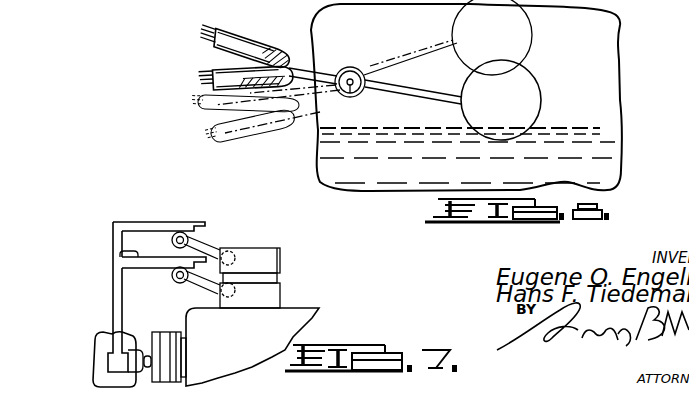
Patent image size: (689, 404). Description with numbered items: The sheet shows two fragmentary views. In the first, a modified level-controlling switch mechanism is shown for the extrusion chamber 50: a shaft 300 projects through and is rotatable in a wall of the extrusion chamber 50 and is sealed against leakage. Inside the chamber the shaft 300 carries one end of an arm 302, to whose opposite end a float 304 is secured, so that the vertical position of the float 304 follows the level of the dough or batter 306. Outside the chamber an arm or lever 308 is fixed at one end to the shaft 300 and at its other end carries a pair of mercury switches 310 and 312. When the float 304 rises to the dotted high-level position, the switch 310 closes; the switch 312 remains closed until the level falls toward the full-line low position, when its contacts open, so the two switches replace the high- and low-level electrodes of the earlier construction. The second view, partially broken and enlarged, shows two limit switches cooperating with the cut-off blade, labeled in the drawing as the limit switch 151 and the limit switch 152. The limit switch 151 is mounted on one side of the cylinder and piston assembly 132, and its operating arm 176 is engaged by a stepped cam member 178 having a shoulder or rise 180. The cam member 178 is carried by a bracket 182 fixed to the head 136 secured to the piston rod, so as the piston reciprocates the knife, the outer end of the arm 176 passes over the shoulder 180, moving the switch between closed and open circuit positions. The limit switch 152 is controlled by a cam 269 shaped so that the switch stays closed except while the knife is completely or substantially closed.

In FIG. 8, the extrusion chamber 50 is at (621, 47).
In FIG. 8, the shaft 300 is at (352, 97).
In FIG. 8, the arm 302 is at (415, 91).
In FIG. 8, the float 304 is at (541, 100).
In FIG. 8, the dough or batter 306 is at (596, 125).
In FIG. 8, the arm or lever 308 is at (315, 68).
In FIG. 8, the mercury switch 310 is at (234, 29).
In FIG. 8, the mercury switch 312 is at (208, 68).
In FIG. 7, the cylinder and piston assembly 132 is at (247, 343).
In FIG. 7, the head 136 is at (96, 370).
In FIG. 7, the lower block 151 is at (283, 293).
In FIG. 7, the upper block 152 is at (283, 259).
In FIG. 7, the operating arm 176 is at (202, 283).
In FIG. 7, the stepped cam member 178 is at (120, 255).
In FIG. 7, the shoulder or rise 180 is at (246, 261).
In FIG. 7, the bracket 182 is at (113, 305).
In FIG. 7, the cam 269 is at (187, 222).